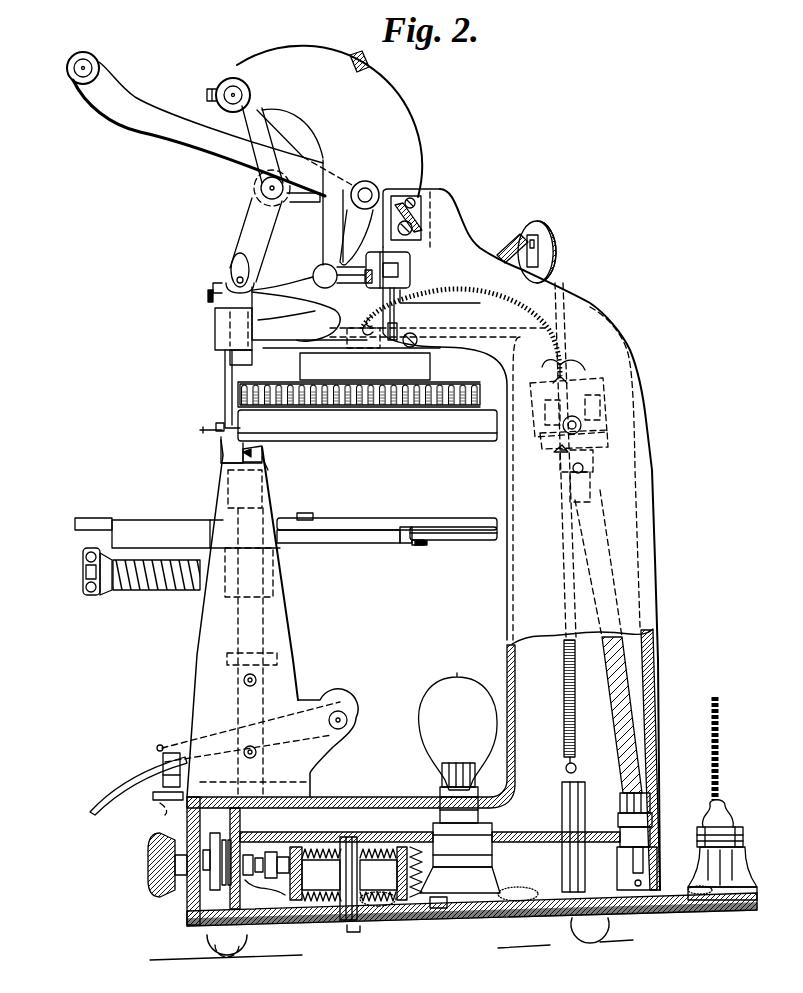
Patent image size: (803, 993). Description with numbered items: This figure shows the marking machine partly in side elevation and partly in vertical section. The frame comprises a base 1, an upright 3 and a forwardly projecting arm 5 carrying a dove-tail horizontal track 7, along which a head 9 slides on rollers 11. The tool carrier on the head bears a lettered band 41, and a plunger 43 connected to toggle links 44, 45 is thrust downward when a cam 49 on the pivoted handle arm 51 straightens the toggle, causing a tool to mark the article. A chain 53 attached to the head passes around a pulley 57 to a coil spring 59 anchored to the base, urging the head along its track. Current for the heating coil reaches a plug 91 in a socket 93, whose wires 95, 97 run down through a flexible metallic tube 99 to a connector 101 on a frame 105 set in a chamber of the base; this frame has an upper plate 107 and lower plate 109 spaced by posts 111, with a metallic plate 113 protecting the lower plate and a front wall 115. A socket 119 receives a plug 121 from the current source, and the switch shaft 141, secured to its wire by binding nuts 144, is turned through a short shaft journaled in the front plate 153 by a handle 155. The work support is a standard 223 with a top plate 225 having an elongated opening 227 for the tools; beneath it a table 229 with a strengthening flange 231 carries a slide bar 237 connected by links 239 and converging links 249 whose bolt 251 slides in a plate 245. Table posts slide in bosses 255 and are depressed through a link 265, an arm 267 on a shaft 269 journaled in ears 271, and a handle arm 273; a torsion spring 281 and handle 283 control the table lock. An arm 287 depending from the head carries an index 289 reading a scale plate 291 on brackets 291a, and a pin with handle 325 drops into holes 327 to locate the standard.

The base 1 is at (360, 797).
The upright 3 is at (627, 558).
The forwardly projecting arm 5 is at (443, 220).
The dove-tail horizontal track 7 is at (400, 243).
The head 9 is at (390, 113).
The rollers 11 is at (440, 191).
The band 41 is at (357, 422).
The plunger 43 is at (215, 325).
The toggle link 44 is at (253, 217).
The toggle link 45 is at (233, 157).
The cam 49 is at (277, 140).
The handle arm 51 is at (203, 133).
The chain 53 is at (512, 240).
The pulley 57 is at (553, 242).
The coil spring 59 is at (565, 673).
The plug 91 is at (575, 373).
The socket 93 is at (604, 412).
The wire 95 is at (560, 453).
The wire 97 is at (592, 450).
The flexible metallic tube 99 is at (650, 655).
The connector 101 is at (622, 823).
The frame 105 is at (370, 783).
The upper plate 107 is at (509, 832).
The lower plate 109 is at (596, 915).
The posts 111 is at (562, 857).
The metallic plate 113 is at (443, 918).
The wall 115 is at (253, 822).
The socket 119 is at (697, 860).
The plug 121 is at (700, 827).
The shaft 141 is at (266, 873).
The binding nuts 144 is at (288, 843).
The front plate 153 is at (193, 903).
The handle 155 is at (150, 866).
The standard 223 is at (277, 618).
The top plate 225 is at (262, 452).
The elongated opening 227 is at (267, 467).
The table 229 is at (360, 512).
The flange 231 is at (362, 532).
The slide bar 237 is at (153, 518).
The links 239 is at (280, 517).
The plate 245 is at (457, 540).
The converging links 249 is at (410, 537).
The bolt 251 is at (420, 547).
The bosses 255 is at (273, 584).
The link 265 is at (290, 697).
The arm 267 is at (307, 703).
The horizontal shaft 269 is at (350, 715).
The ears 271 is at (327, 750).
The handle arm 273 is at (130, 768).
The helical torsion spring 281 is at (158, 583).
The handle 283 is at (83, 570).
The arm 287 is at (225, 377).
The index 289 is at (217, 426).
The plate 291 is at (200, 431).
The brackets 291a is at (219, 446).
The handle 325 is at (160, 747).
The holes 327 is at (163, 802).